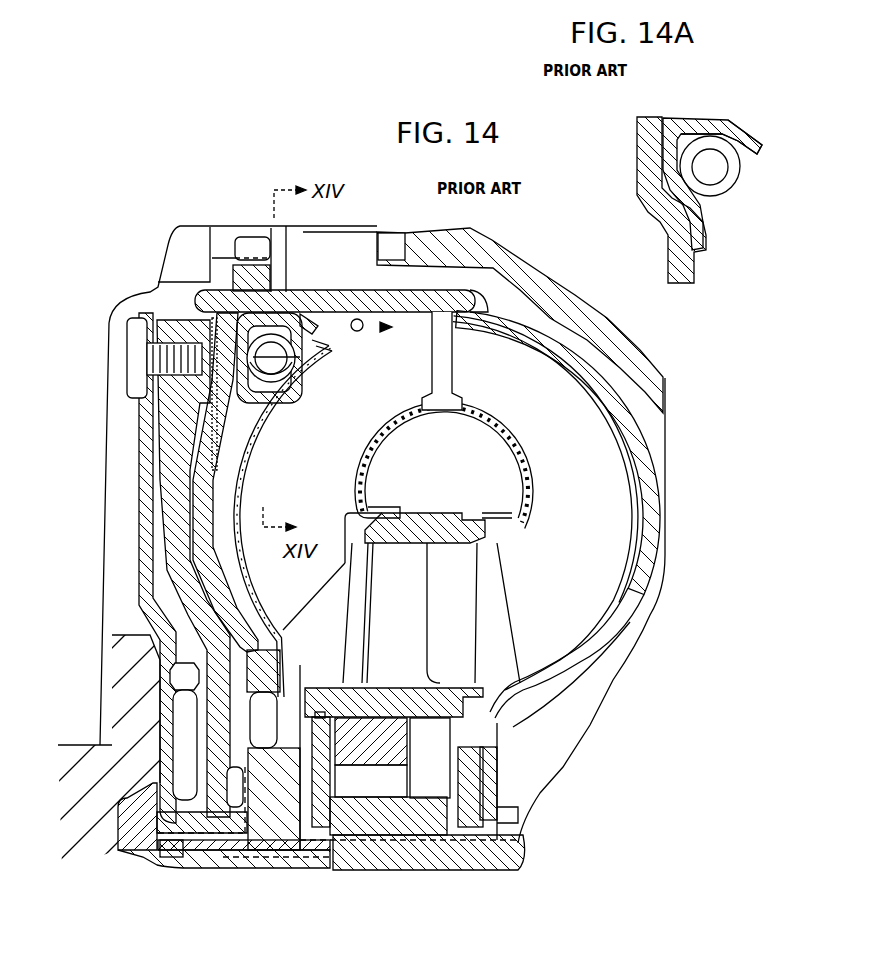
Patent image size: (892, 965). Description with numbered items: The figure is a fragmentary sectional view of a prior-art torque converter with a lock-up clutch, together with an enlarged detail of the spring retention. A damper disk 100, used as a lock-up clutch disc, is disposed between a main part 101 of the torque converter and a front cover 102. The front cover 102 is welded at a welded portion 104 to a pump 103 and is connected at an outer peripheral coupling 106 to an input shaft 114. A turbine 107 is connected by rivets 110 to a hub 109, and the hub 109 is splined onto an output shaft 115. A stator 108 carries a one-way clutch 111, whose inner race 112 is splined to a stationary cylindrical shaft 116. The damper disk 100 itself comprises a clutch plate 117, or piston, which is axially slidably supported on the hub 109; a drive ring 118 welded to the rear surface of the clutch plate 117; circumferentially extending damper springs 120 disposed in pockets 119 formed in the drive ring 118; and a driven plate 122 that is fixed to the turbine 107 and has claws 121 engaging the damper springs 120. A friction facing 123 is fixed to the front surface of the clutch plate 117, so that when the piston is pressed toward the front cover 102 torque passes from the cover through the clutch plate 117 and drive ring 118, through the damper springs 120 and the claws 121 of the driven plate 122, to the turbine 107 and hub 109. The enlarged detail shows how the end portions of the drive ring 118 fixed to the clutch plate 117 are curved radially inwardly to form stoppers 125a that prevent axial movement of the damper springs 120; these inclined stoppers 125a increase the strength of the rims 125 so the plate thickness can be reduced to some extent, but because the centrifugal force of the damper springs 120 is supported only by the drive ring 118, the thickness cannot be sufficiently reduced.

In FIG. 14, the damper disk 100 is at (340, 312).
In FIG. 14, the main part of torque converter 101 is at (646, 433).
In FIG. 14, the front cover 102 is at (166, 540).
In FIG. 14, the pump 103 is at (598, 492).
In FIG. 14, the welded portion 104 is at (486, 304).
In FIG. 14, the outer peripheral coupling 106 is at (133, 352).
In FIG. 14, the turbine 107 is at (344, 499).
In FIG. 14, the stator 108 is at (416, 621).
In FIG. 14, the hub 109 is at (270, 833).
In FIG. 14, the rivets 110 is at (300, 673).
In FIG. 14, the one-way clutch 111 is at (364, 782).
In FIG. 14, the inner race 112 is at (423, 822).
In FIG. 14, the input shaft 114 is at (72, 760).
In FIG. 14, the output shaft 115 is at (368, 865).
In FIG. 14, the stationary cylindrical shaft 116 is at (523, 852).
In FIG. 14, the clutch plate 117 is at (200, 483).
In FIG. 14A, the clutch plate 117 is at (677, 240).
In FIG. 14, the drive ring 118 is at (223, 228).
In FIG. 14A, the drive ring 118 is at (690, 120).
In FIG. 14, the pockets 119 is at (274, 375).
In FIG. 14, the damper springs 120 is at (300, 340).
In FIG. 14A, the damper springs 120 is at (727, 187).
In FIG. 14, the claws 121 is at (278, 358).
In FIG. 14, the driven plate 122 is at (358, 331).
In FIG. 14, the friction facing 123 is at (197, 408).
In FIG. 14A, the rims 125 is at (722, 130).
In FIG. 14A, the stoppers 125a is at (745, 135).